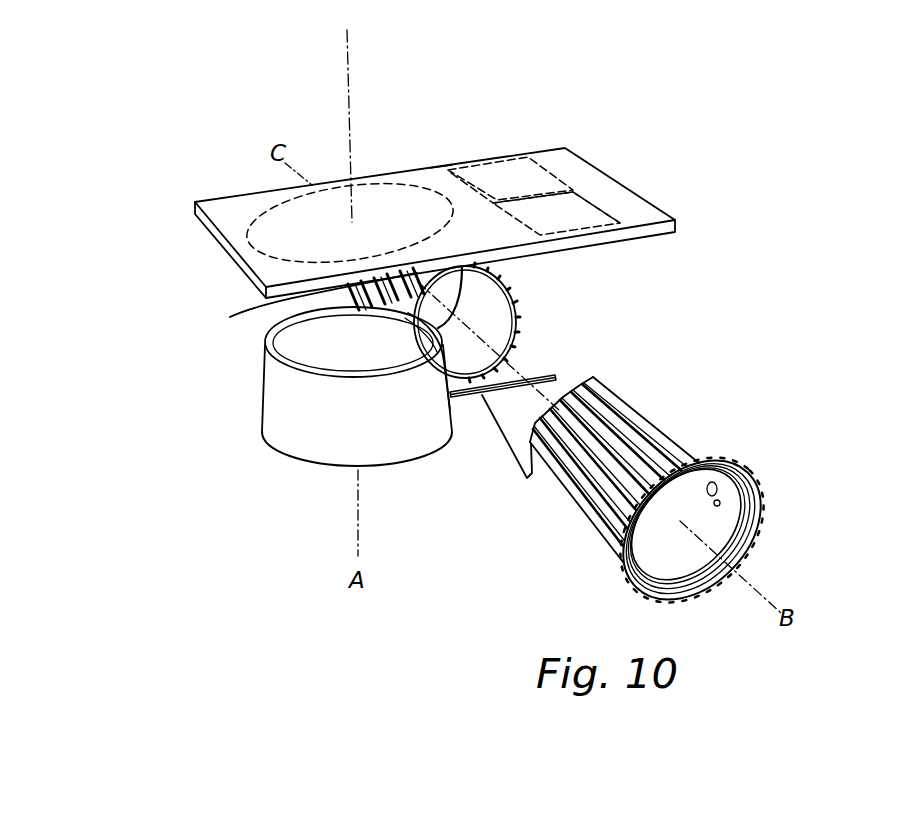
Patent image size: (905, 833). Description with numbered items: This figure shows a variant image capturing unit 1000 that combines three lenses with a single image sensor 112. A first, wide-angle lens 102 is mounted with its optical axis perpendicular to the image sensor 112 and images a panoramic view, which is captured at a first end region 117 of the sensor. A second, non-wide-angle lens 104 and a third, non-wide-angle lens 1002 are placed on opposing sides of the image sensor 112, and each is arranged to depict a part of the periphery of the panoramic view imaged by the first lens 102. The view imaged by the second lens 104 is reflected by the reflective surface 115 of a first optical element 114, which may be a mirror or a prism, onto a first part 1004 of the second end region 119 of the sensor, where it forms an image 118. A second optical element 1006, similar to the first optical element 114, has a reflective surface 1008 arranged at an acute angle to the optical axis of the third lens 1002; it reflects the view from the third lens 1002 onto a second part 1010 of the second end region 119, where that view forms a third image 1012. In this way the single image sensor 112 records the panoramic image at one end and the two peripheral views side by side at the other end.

The image capturing unit 1000 is at (161, 94).
The image sensor 112 is at (200, 202).
The first end region 117 is at (237, 193).
The second end region 119 is at (442, 165).
The third image 1012 is at (508, 172).
The second part of the second end region 1010 is at (538, 167).
The image 118 is at (570, 213).
The first part of the second end region 1004 is at (598, 207).
The reflective surface 1008 is at (408, 313).
The third lens 1002 is at (283, 298).
The first lens 102 is at (277, 410).
The second optical element 1006 is at (520, 373).
The reflective surface 115 is at (560, 386).
The first optical element 114 is at (520, 480).
The second lens 104 is at (565, 498).